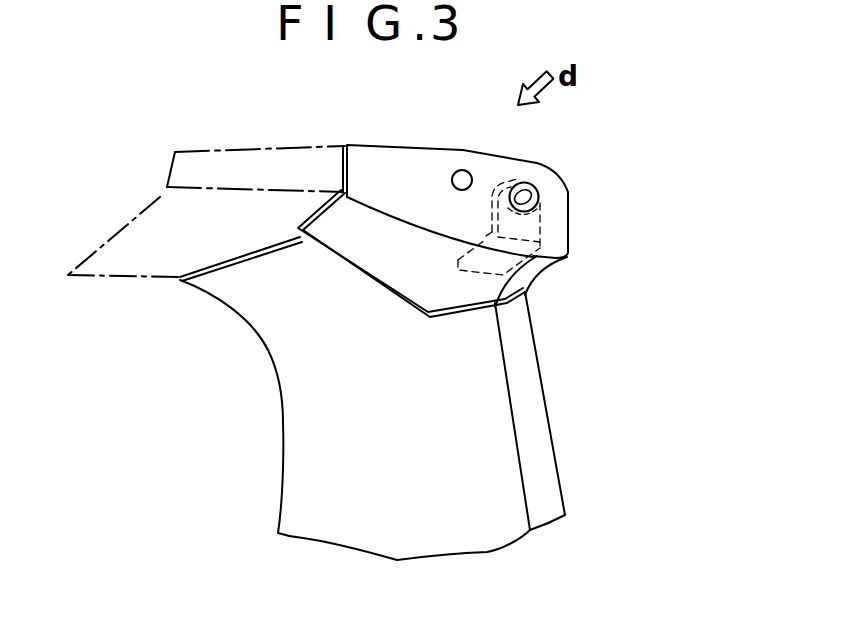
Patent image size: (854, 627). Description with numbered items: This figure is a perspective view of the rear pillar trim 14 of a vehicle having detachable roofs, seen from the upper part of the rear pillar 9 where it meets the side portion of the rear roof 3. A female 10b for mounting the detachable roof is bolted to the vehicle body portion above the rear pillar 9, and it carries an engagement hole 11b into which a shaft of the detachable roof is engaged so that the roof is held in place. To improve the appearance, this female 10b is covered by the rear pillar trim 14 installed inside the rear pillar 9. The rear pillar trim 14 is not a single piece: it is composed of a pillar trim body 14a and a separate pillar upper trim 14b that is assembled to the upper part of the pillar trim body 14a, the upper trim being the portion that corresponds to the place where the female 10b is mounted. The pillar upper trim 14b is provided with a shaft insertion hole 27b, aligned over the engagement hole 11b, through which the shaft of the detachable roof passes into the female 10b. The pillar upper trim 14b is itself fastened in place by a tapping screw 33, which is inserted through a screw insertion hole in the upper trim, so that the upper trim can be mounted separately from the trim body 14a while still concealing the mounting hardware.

The rear roof 3 is at (288, 167).
The pillar upper trim 14b is at (403, 173).
The shaft insertion hole 27b is at (517, 186).
The engagement hole 11b is at (542, 207).
The female for mounting the detachable roof 10b is at (542, 230).
The tapping screw 33 is at (468, 175).
The rear pillar trim 14 is at (550, 348).
The pillar trim body 14a is at (487, 480).
The rear pillar 9 is at (317, 418).